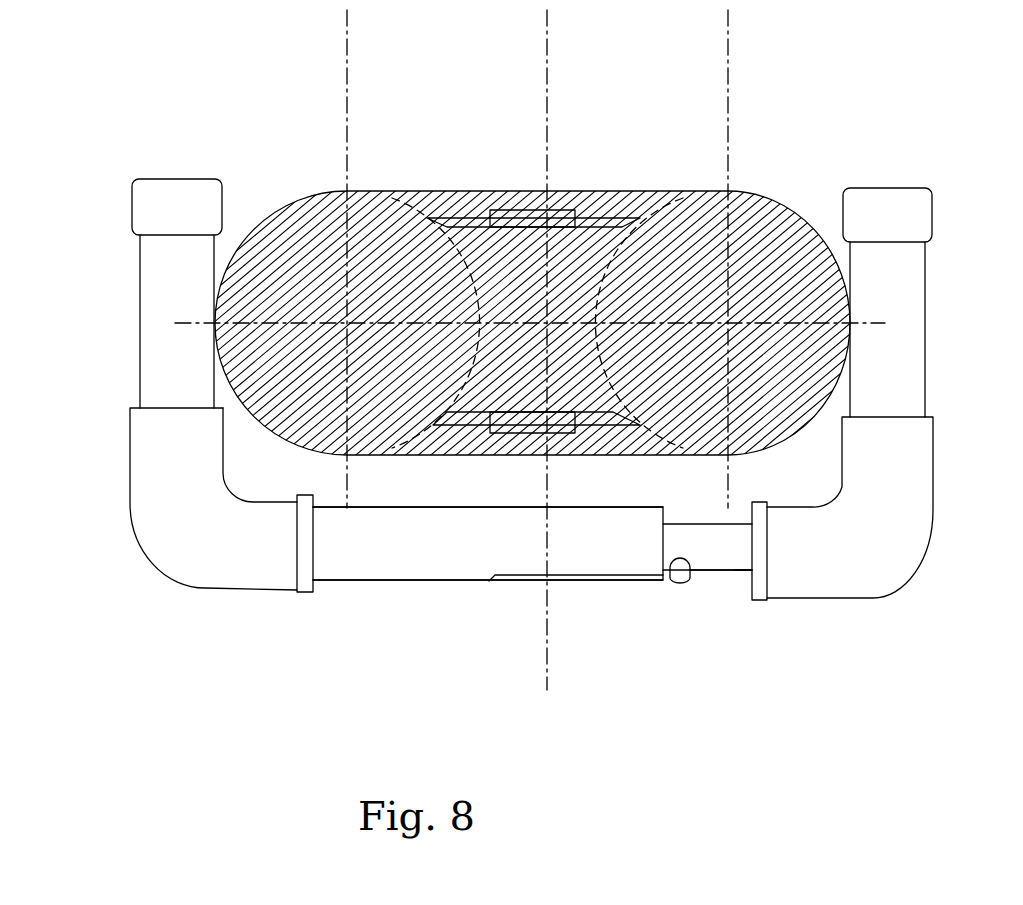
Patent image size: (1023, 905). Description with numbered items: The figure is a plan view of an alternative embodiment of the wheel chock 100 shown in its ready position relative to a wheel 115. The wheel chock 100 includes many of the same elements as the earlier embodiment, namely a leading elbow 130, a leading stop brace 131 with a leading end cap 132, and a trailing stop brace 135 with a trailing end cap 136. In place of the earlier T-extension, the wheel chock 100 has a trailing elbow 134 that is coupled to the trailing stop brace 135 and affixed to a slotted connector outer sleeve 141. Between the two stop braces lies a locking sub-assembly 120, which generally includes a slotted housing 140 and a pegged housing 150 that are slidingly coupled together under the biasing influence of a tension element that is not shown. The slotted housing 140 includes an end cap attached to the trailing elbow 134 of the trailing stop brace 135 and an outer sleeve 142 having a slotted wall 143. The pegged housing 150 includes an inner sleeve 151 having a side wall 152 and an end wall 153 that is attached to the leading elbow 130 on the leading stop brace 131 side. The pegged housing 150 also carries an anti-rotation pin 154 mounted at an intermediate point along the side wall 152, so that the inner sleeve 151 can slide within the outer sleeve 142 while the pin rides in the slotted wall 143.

The wheel chock 100 is at (712, 668).
The wheel 115 is at (768, 222).
The locking sub-assembly 120 is at (473, 584).
The leading elbow 130 is at (895, 597).
The leading stop brace 131 is at (930, 300).
The leading end cap 132 is at (932, 200).
The trailing elbow 134 is at (143, 558).
The trailing stop brace 135 is at (140, 360).
The trailing end cap 136 is at (133, 217).
The slotted housing 140 is at (455, 569).
The slotted connector outer sleeve 141 is at (303, 593).
The outer sleeve 142 is at (420, 583).
The slotted wall 143 is at (528, 588).
The pegged housing 150 is at (694, 535).
The inner sleeve 151 is at (760, 600).
The side wall 152 is at (733, 572).
The end wall 153 is at (748, 588).
The anti-rotation pin 154 is at (678, 588).